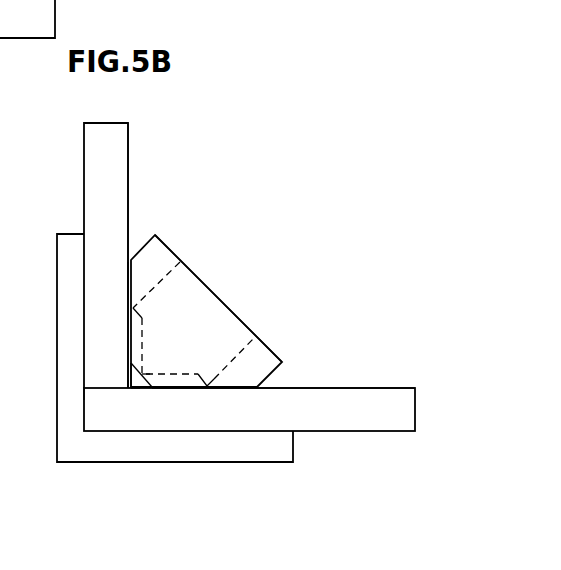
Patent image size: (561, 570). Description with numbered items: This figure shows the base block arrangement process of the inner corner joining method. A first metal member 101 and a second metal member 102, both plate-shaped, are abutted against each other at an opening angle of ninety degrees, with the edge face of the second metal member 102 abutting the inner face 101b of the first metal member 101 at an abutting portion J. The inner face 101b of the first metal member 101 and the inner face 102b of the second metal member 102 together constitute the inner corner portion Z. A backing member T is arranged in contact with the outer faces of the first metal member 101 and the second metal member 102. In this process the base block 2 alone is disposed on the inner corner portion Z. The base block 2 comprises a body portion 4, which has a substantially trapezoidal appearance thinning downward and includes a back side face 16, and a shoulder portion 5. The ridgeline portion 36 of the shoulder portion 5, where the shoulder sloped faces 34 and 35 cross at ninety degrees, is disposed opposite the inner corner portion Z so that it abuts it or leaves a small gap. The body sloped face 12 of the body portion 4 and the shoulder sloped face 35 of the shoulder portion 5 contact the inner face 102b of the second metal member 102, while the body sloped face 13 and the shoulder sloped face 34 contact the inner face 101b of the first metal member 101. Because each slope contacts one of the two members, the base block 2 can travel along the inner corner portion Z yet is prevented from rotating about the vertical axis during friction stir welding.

The first metal member 101 is at (23, 50).
The inner face of the first metal member 101b is at (390, 386).
The second metal member 102 is at (131, 118).
The inner face of the second metal member 102b is at (128, 150).
The base block 2 is at (197, 252).
The body portion 4 is at (226, 299).
The shoulder portion 5 is at (149, 376).
The body sloped face 12 is at (127, 281).
The body sloped face 13 is at (233, 392).
The back side face 16 is at (178, 326).
The shoulder sloped face 34 is at (138, 391).
The shoulder sloped face 35 is at (130, 381).
The ridgeline portion 36 is at (130, 390).
The abutting portion J is at (83, 389).
The inner corner portion Z is at (135, 396).
The backing member T is at (83, 466).